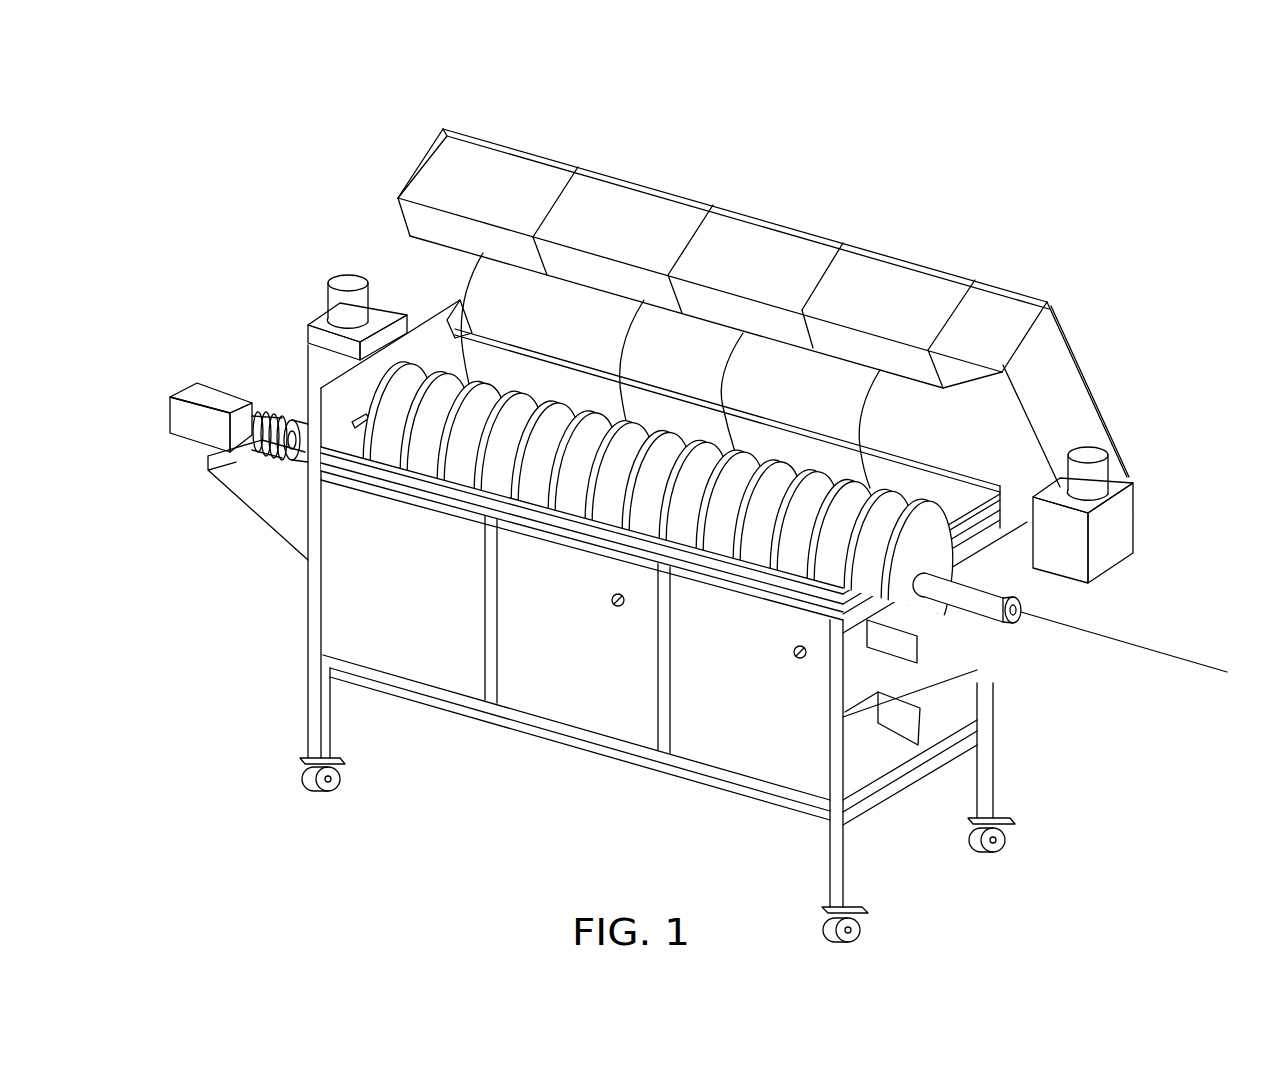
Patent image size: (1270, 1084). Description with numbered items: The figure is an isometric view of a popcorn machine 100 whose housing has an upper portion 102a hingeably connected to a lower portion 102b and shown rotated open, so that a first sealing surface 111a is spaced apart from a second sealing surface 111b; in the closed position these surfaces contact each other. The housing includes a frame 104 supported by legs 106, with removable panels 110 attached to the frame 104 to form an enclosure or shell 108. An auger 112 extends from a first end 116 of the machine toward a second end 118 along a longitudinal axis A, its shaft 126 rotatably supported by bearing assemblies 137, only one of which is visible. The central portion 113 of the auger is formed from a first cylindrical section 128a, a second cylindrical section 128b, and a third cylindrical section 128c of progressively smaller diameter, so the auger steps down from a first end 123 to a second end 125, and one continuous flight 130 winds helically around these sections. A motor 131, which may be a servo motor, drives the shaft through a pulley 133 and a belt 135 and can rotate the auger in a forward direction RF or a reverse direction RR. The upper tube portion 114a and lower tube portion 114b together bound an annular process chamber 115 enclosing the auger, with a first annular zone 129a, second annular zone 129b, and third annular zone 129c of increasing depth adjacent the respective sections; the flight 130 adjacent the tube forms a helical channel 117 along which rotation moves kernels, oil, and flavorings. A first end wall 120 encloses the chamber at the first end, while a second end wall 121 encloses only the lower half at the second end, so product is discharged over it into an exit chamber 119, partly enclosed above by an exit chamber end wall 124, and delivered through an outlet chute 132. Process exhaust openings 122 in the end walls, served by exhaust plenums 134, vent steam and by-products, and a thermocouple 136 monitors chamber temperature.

The popcorn machine 100 is at (681, 90).
The upper portion 102a is at (1008, 305).
The lower portion 102b is at (708, 758).
The frame 104 is at (460, 133).
The legs 106 is at (330, 742).
The enclosure or shell 108 is at (752, 228).
The panels 110 is at (497, 160).
The first sealing surface 111a is at (617, 270).
The second sealing surface 111b is at (545, 528).
The auger 112 is at (622, 440).
The central portion 113 is at (933, 500).
The upper tube portion 114a is at (1000, 398).
The lower tube portion 114b is at (953, 553).
The process chamber 115 is at (985, 385).
The first end 116 is at (420, 285).
The channel 117 is at (497, 487).
The second end 118 is at (1140, 580).
The exit chamber 119 is at (1018, 455).
The first end wall 120 is at (322, 450).
The second end wall 121 is at (897, 607).
The process exhaust openings 122 is at (393, 362).
The first end 123 is at (425, 350).
The exit chamber end wall 124 is at (1070, 374).
The second end 125 is at (923, 620).
The shaft 126 is at (947, 607).
The first cylindrical section 128a is at (430, 490).
The second cylindrical section 128b is at (770, 560).
The third cylindrical section 128c is at (835, 565).
The first annular zone 129a is at (538, 402).
The second annular zone 129b is at (807, 473).
The third annular zone 129c is at (858, 498).
The flight 130 is at (782, 470).
The motor 131 is at (200, 392).
The outlet chute 132 is at (930, 720).
The pulley 133 is at (272, 428).
The exhaust plenums 134 is at (320, 317).
The belt 135 is at (280, 452).
The thermocouples 136 is at (357, 440).
The bearing assemblies 137 is at (1013, 601).
The longitudinal axis A is at (1223, 672).
The forward direction RF is at (1135, 655).
The reverse direction RR is at (1185, 665).